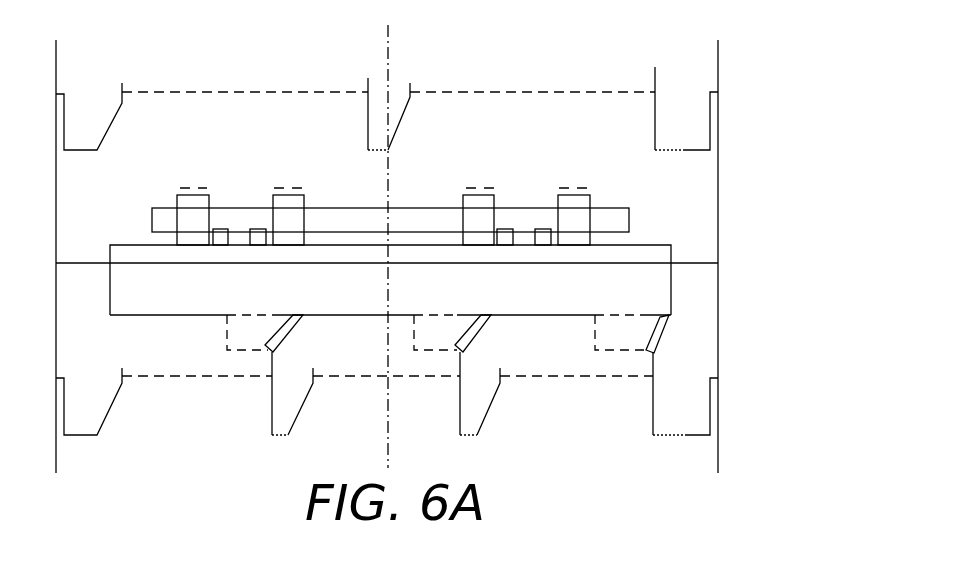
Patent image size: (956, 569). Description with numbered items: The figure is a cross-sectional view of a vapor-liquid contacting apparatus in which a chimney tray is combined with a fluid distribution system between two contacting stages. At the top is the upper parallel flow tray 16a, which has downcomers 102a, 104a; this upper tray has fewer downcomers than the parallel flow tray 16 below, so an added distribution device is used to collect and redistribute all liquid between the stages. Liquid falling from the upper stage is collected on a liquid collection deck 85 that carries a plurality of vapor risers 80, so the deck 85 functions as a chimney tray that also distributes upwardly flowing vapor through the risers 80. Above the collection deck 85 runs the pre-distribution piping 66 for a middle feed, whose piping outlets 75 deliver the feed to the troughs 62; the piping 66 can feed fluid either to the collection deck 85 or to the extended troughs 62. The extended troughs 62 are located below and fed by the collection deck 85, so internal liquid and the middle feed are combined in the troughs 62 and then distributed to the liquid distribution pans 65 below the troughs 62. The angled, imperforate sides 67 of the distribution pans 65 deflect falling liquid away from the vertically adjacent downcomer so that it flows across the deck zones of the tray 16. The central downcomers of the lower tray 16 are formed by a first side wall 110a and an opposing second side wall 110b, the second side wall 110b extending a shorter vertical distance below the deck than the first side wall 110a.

The parallel flow tray 16 is at (752, 371).
The upper parallel flow tray 16a is at (752, 76).
The trough 62 is at (145, 305).
The liquid distribution pan 65 is at (226, 336).
The pre-distribution piping 66 is at (244, 213).
The angled, imperforate side 67 is at (473, 333).
The piping outlet 75 is at (543, 233).
The vapor riser 80 is at (193, 204).
The liquid collection deck 85 is at (695, 262).
The downcomer 102a is at (372, 78).
The downcomer 104a is at (679, 70).
The first side wall 110a is at (272, 410).
The second side wall 110b is at (315, 377).